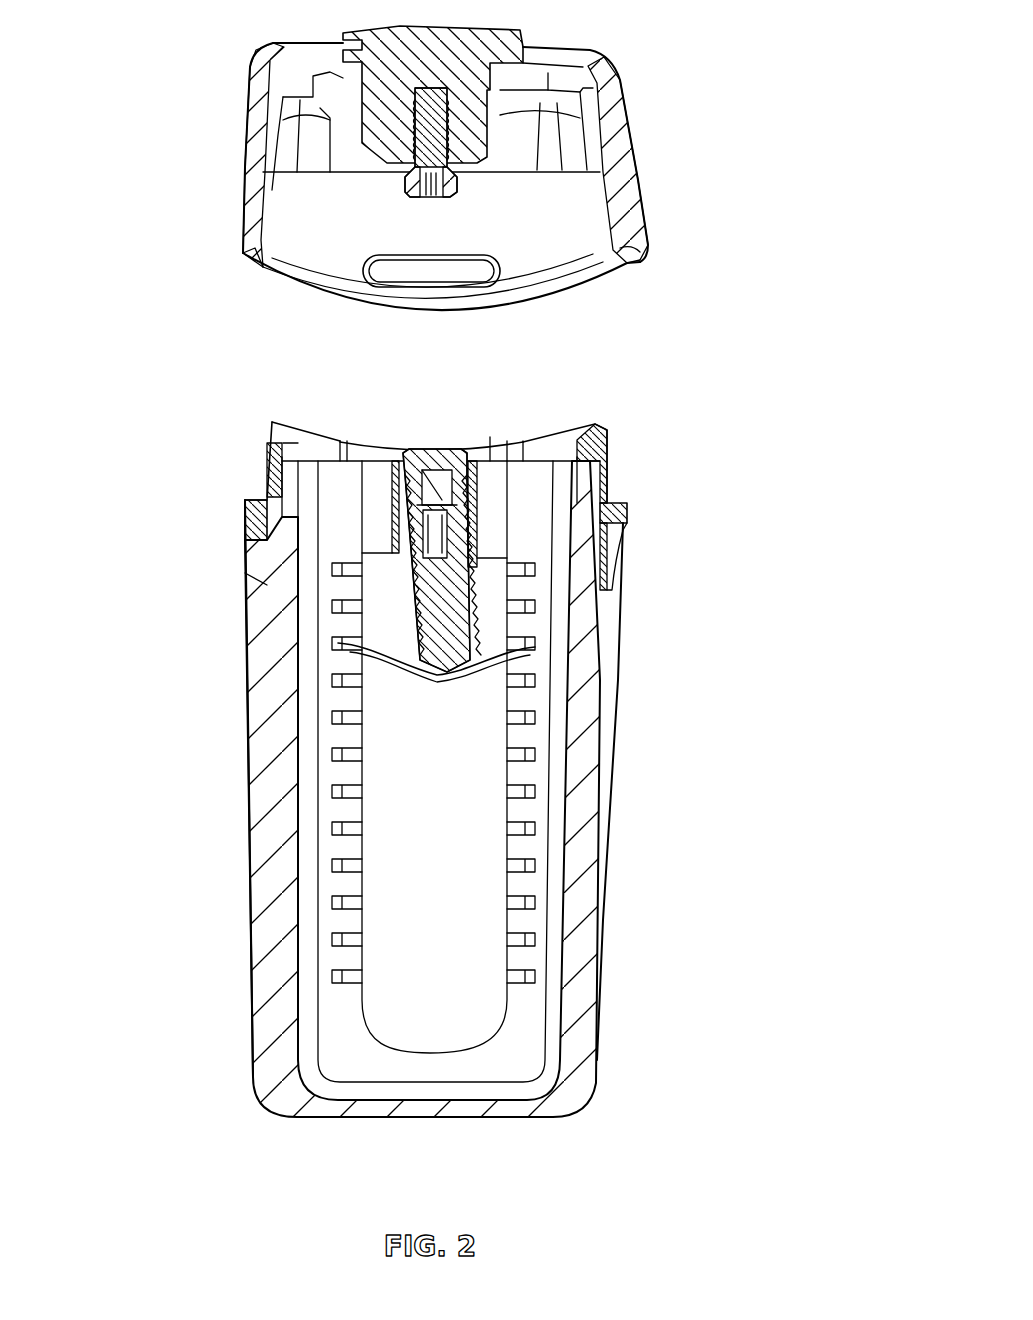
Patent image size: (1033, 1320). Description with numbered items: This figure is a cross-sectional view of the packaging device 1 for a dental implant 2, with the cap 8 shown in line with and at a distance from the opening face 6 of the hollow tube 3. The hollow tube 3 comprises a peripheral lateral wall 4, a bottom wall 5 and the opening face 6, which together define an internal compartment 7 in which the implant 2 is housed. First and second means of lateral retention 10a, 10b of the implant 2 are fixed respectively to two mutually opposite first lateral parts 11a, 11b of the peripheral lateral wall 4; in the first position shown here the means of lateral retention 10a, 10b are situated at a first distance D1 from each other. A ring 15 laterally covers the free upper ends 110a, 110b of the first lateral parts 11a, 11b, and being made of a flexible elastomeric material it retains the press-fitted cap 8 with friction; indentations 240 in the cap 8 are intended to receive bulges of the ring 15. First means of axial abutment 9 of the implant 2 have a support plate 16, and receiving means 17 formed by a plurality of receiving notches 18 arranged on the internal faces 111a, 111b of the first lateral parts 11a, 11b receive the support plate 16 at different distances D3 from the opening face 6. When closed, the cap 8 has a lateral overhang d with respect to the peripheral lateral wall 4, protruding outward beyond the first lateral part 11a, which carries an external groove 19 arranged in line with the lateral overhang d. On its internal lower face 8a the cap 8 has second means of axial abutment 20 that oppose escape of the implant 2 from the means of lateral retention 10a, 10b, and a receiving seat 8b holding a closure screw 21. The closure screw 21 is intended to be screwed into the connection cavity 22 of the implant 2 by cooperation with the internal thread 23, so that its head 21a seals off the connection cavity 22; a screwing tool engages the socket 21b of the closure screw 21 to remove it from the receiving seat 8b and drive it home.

The packaging device 1 is at (740, 427).
The dental implant 2 is at (400, 588).
The hollow tube 3 is at (155, 872).
The peripheral lateral wall 4 is at (235, 782).
The bottom wall 5 is at (412, 1108).
The opening face 6 is at (490, 461).
The internal compartment 7 is at (434, 757).
The cap 8 is at (652, 178).
The internal lower face 8a is at (337, 90).
The receiving seat 8b is at (435, 122).
The first means of axial abutment 9 is at (457, 690).
The first means of lateral retention 10a is at (477, 522).
The second means of lateral retention 10b is at (392, 527).
The first lateral part 11a is at (613, 767).
The first lateral part 11b is at (247, 707).
The ring 15 is at (260, 468).
The support plate 16 is at (400, 667).
The receiving means 17 is at (433, 773).
The receiving notches 18 is at (357, 810).
The external groove 19 is at (597, 838).
The second means of axial abutment 20 is at (383, 186).
The closure screw 21 is at (437, 123).
The head 21a is at (458, 193).
The socket 21b is at (430, 197).
The connection cavity 22 is at (447, 478).
The internal thread 23 is at (430, 537).
The free upper end 110a is at (582, 488).
The free upper end 110b is at (292, 493).
The internal face 111a is at (513, 887).
The internal face 111b is at (335, 898).
The indentations 240 is at (470, 273).
The lateral overhang d is at (632, 243).
The first distance D1 is at (472, 455).
The distance D3 is at (605, 461).